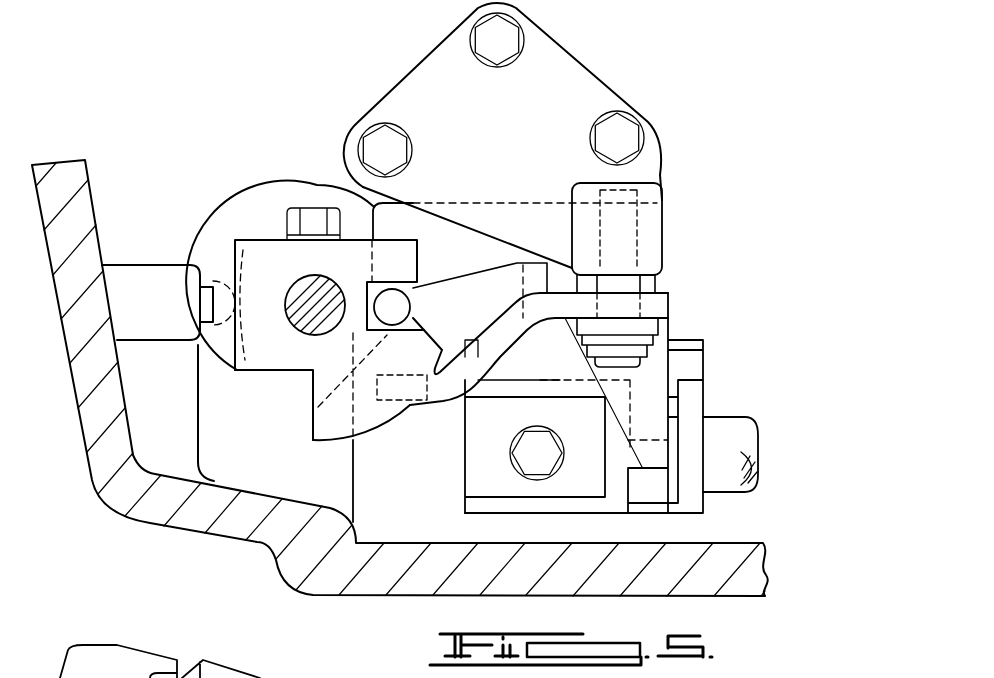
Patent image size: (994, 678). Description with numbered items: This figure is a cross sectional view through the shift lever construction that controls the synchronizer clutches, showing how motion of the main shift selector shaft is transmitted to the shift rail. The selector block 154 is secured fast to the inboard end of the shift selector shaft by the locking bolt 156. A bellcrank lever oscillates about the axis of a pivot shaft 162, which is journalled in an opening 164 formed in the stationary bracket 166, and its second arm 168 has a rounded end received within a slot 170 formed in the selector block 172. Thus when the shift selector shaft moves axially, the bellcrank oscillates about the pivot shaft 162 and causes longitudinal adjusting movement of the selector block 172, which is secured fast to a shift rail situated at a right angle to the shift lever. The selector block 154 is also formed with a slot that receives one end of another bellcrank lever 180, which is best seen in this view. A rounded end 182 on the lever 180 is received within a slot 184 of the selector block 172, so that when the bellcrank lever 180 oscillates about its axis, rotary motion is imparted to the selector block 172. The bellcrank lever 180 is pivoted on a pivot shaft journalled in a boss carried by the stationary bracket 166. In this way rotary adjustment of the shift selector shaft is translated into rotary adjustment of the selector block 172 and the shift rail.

The selector block 154 is at (473, 478).
The locking bolt 156 is at (533, 467).
The pivot shaft 162 is at (703, 352).
The opening 164 is at (632, 236).
The stationary bracket 166 is at (587, 72).
The second arm 168 is at (498, 320).
The slot 170 is at (333, 427).
The selector block 172 is at (263, 350).
The bellcrank lever 180 is at (508, 268).
The rounded end 182 is at (397, 324).
The slot 184 is at (413, 288).